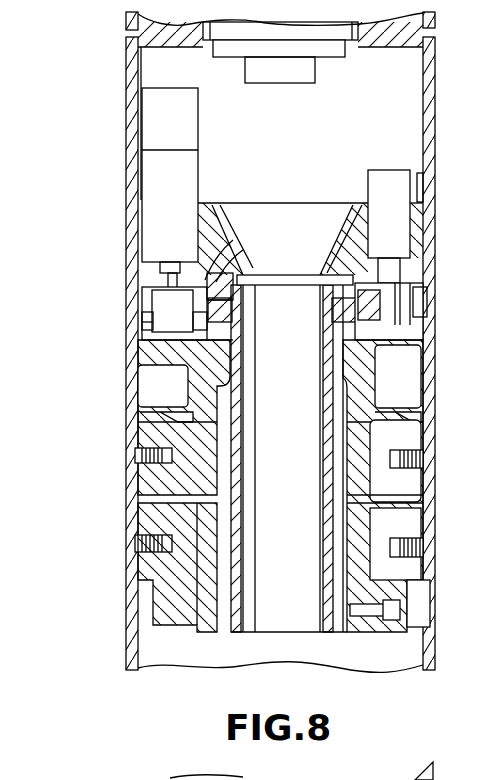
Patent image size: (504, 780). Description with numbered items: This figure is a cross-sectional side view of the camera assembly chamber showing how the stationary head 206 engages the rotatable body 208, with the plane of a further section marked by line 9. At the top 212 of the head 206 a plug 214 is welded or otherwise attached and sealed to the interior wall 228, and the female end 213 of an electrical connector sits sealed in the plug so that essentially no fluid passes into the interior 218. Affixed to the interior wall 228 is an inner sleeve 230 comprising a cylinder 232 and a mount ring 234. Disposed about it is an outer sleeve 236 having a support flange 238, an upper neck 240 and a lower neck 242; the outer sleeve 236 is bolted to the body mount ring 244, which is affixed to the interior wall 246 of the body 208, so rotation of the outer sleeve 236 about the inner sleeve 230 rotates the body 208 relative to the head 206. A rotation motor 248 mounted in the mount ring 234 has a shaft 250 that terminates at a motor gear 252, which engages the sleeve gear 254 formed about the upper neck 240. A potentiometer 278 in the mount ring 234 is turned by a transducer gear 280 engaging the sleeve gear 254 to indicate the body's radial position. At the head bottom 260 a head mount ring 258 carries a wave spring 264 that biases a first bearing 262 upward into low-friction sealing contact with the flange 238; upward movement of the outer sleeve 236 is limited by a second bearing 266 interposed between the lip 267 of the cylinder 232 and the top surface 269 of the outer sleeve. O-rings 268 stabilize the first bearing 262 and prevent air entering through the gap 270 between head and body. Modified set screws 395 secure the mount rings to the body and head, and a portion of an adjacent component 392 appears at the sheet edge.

The section line 9- 9 is at (173, 303).
The head 206 is at (430, 230).
The body 208 is at (434, 627).
The top 212 is at (435, 58).
The female end 213 is at (257, 83).
The plug 214 is at (398, 47).
The interior 218 is at (225, 660).
The interior wall 228 is at (422, 150).
The inner sleeve 230 is at (368, 198).
The cylinder 232 is at (235, 585).
The mount ring 234 is at (424, 190).
The outer sleeve 236 is at (347, 600).
The support flange 238 is at (415, 345).
The upper neck 240 is at (352, 322).
The lower neck 242 is at (217, 547).
The body mount ring 244 is at (172, 623).
The interior wall 246 is at (140, 658).
The rotation motor 248 is at (198, 138).
The shaft 250 is at (135, 290).
The motor gear 252 is at (142, 322).
The sleeve gear 254 is at (215, 328).
The head mount ring 258 is at (425, 432).
The head bottom 260 is at (420, 480).
The first bearing 262 is at (160, 385).
The wave spring 264 is at (142, 428).
The second bearing 266 is at (410, 255).
The lip 267 is at (233, 242).
The O-rings 268 is at (150, 398).
The top surface 269 is at (240, 258).
The gap 270 is at (430, 510).
The potentiometer 278 is at (388, 170).
The transducer gear 280 is at (430, 277).
The adjacent figure element 392 is at (337, 745).
The modified set screws 395 is at (135, 545).